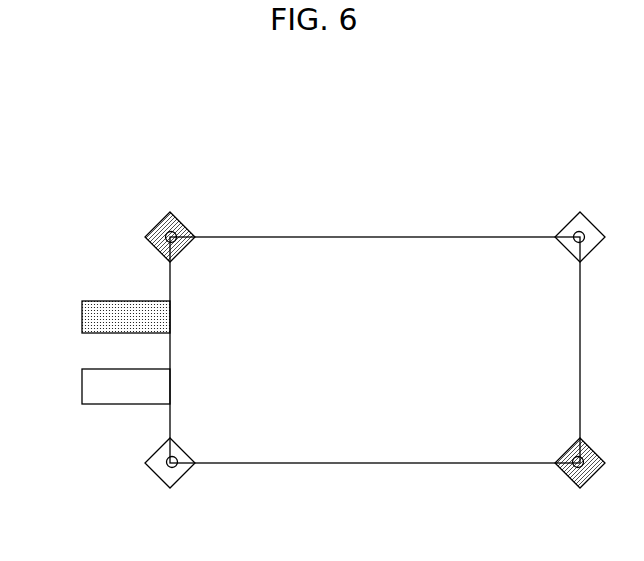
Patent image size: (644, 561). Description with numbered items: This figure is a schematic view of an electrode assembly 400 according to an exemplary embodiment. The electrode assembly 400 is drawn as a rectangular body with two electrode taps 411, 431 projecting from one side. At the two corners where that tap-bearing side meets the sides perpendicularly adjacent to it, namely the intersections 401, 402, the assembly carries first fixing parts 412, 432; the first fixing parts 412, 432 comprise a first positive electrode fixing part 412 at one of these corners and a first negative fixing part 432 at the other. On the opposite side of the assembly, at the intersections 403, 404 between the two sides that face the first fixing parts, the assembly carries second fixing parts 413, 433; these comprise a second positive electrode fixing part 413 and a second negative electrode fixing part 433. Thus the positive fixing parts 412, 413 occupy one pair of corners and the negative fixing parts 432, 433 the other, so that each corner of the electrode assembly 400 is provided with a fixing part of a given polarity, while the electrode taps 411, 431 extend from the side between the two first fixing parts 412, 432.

The electrode assembly 400 is at (66, 150).
The intersection 401 is at (178, 454).
The intersection 402 is at (179, 244).
The intersection 403 is at (571, 244).
The intersection 404 is at (570, 455).
The electrode tap 411 is at (95, 383).
The first positive electrode fixing part 412 is at (163, 470).
The second positive electrode fixing part 413 is at (588, 224).
The electrode tap 431 is at (95, 314).
The first negative fixing part 432 is at (159, 231).
The second negative electrode fixing part 433 is at (585, 474).